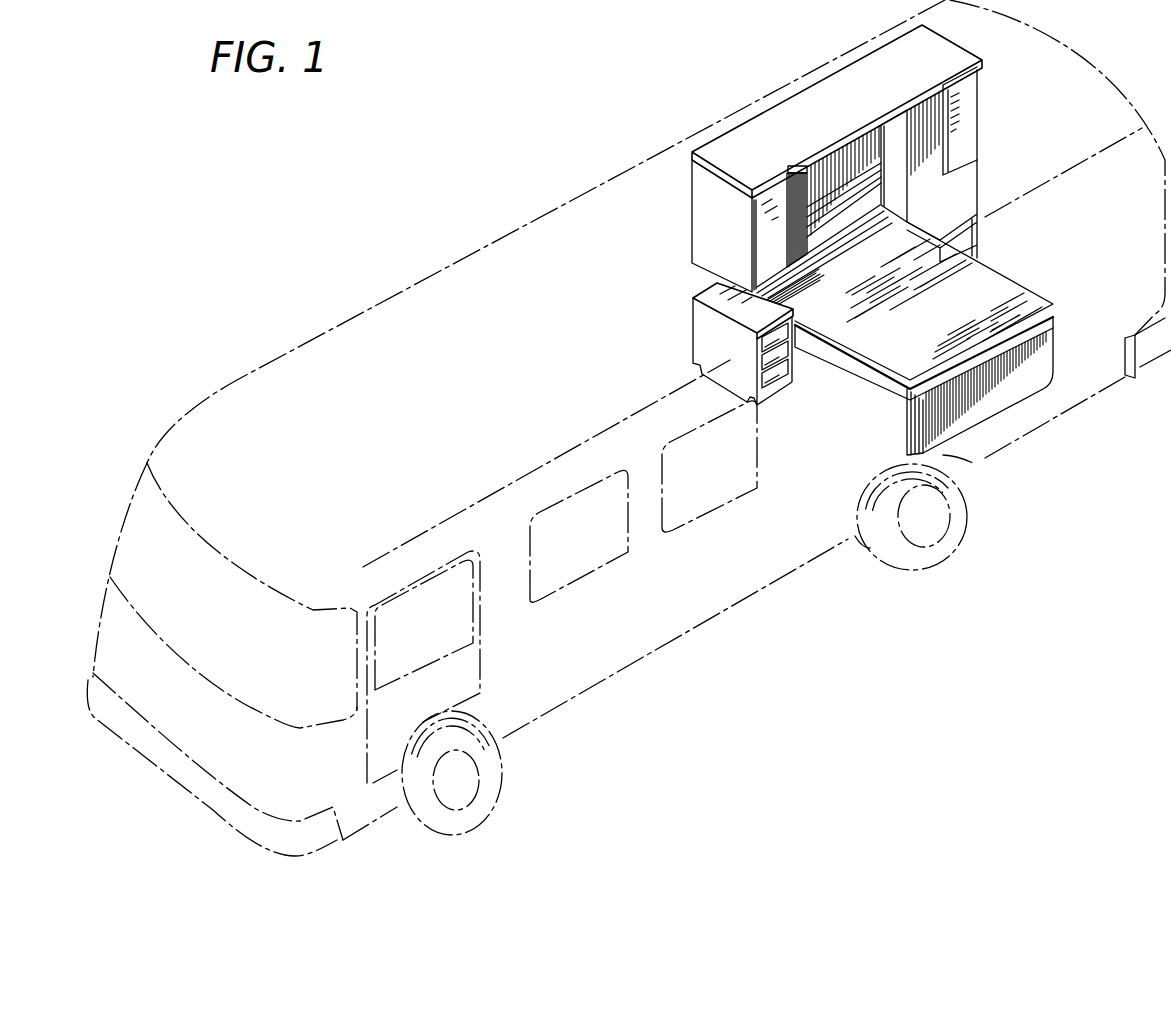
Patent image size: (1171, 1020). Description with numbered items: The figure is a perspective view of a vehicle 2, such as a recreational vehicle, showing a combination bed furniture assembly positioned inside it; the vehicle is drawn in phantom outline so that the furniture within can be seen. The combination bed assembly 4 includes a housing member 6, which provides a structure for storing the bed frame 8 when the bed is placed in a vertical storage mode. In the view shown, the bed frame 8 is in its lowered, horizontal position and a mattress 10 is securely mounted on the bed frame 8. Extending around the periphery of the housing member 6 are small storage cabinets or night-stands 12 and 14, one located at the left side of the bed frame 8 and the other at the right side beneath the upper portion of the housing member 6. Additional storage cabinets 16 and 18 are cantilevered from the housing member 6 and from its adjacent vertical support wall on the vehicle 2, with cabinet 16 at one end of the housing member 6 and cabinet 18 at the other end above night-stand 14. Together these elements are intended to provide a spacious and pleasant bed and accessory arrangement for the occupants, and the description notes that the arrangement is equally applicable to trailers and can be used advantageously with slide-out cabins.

The vehicle 2 is at (492, 223).
The combination bed assembly 4 is at (808, 117).
The housing member 6 is at (893, 158).
The bed frame 8 is at (870, 383).
The mattress 10 is at (990, 310).
The storage cabinet or night-stand 12 is at (710, 335).
The storage cabinet or night-stand 14 is at (963, 200).
The storage cabinet 16 is at (693, 213).
The storage cabinet 18 is at (970, 120).